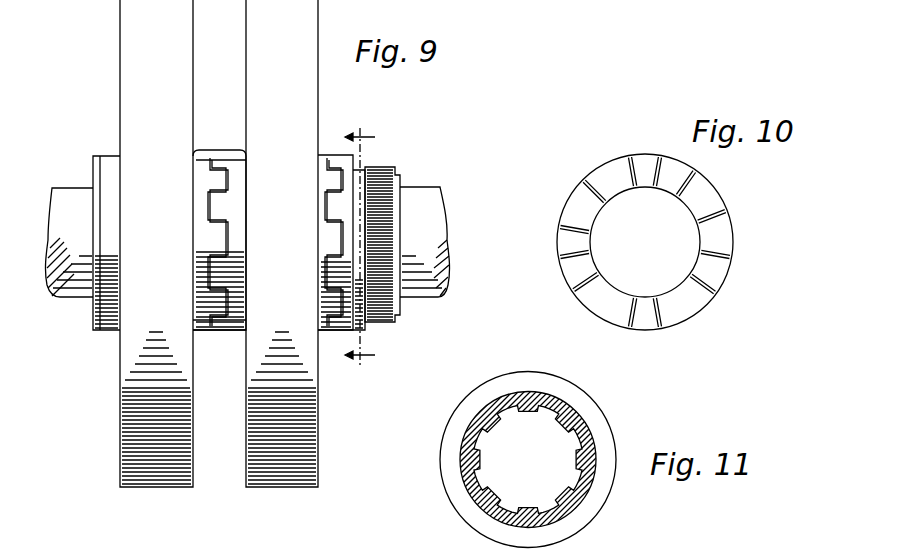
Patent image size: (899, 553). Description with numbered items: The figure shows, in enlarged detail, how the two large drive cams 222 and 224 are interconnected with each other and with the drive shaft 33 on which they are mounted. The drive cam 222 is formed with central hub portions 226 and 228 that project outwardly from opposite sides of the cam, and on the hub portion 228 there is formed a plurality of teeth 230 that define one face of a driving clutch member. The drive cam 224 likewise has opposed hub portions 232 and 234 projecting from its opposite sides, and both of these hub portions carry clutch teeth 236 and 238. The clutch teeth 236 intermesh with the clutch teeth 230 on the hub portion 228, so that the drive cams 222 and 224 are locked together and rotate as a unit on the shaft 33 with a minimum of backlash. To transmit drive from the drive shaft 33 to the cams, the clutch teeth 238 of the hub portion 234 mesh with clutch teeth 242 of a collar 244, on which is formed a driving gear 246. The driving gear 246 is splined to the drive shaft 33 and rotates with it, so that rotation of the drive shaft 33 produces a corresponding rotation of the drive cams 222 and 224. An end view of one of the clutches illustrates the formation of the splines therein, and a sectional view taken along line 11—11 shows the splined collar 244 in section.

In FIG. 9, the drive shaft 33 is at (68, 200).
In FIG. 9, the drive cam 222 is at (118, 28).
In FIG. 9, the drive cam 224 is at (306, 17).
In FIG. 9, the hub portion 226 is at (112, 331).
In FIG. 9, the hub portion 228 is at (198, 331).
In FIG. 9, the teeth 230 is at (213, 178).
In FIG. 9, the hub portion 232 is at (240, 335).
In FIG. 9, the hub portion 234 is at (322, 160).
In FIG. 9, the clutch teeth 236 is at (226, 160).
In FIG. 9, the clutch teeth 238 is at (343, 185).
In FIG. 10, the clutch teeth 238 is at (590, 176).
In FIG. 9, the clutch teeth 242 is at (343, 331).
In FIG. 9, the collar 244 is at (356, 328).
In FIG. 11, the collar 244 is at (608, 440).
In FIG. 9, the driving gear 246 is at (393, 166).
In FIG. 9, the line 11— 11 is at (360, 249).